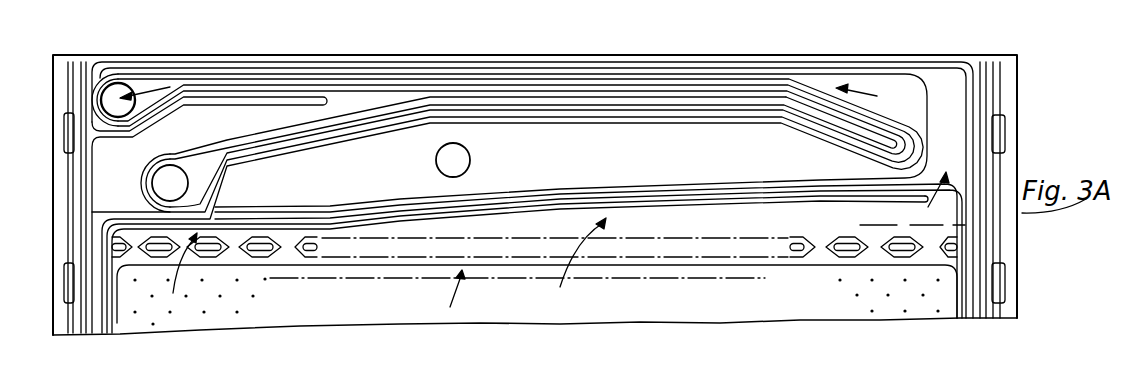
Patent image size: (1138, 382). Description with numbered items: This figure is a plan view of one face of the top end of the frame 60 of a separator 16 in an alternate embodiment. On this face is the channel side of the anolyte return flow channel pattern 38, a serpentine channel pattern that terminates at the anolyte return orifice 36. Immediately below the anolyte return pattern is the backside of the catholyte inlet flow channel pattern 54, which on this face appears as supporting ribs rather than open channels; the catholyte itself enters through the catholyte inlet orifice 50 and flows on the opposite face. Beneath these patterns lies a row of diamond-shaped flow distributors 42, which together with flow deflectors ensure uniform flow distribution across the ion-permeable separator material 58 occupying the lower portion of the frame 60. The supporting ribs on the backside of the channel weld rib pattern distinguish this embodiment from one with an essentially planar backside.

The separator 16 is at (1026, 294).
The anolyte return orifice 36 is at (138, 82).
The anolyte return flow channel pattern 38 is at (237, 104).
The flow distributors 42 is at (843, 249).
The catholyte inlet orifice 50 is at (141, 183).
The catholyte inlet flow channel pattern 54 is at (585, 127).
The ion-permeable separator material 58 is at (314, 305).
The frame 60 is at (1019, 69).